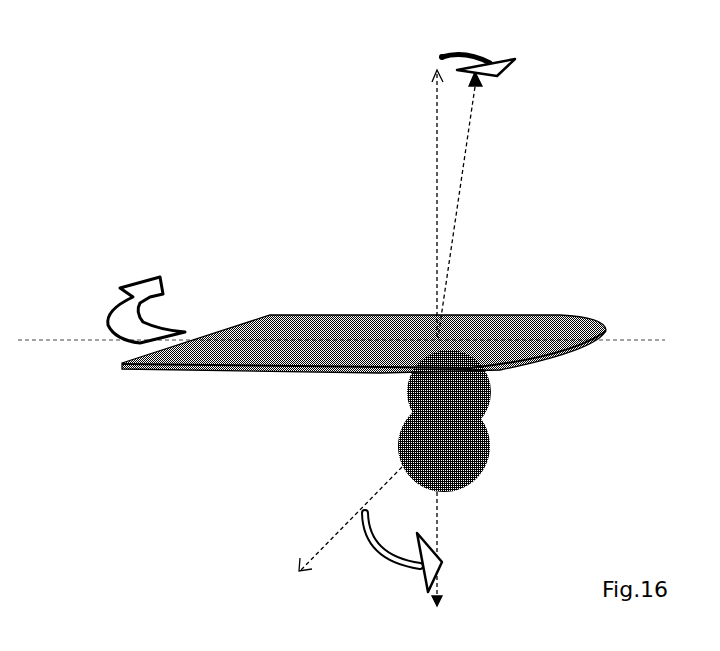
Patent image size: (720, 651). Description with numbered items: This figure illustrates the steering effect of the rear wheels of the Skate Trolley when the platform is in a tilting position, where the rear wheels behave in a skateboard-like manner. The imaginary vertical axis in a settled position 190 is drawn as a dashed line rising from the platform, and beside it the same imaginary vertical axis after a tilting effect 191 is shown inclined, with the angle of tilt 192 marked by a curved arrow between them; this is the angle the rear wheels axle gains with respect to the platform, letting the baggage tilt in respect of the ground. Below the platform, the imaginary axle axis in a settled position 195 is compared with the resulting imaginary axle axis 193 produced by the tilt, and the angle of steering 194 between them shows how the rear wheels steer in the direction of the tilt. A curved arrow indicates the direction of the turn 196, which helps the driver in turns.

The imaginary vertical axis in a settled position 190 is at (437, 110).
The imaginary vertical axis after a tilting effect 191 is at (465, 130).
The angle of tilt 192 is at (446, 46).
The resulting imaginary axle axis 193 is at (437, 514).
The angle of steering 194 is at (395, 552).
The imaginary axle axis in a settled position 195 is at (333, 537).
The direction of the turn 196 is at (110, 280).